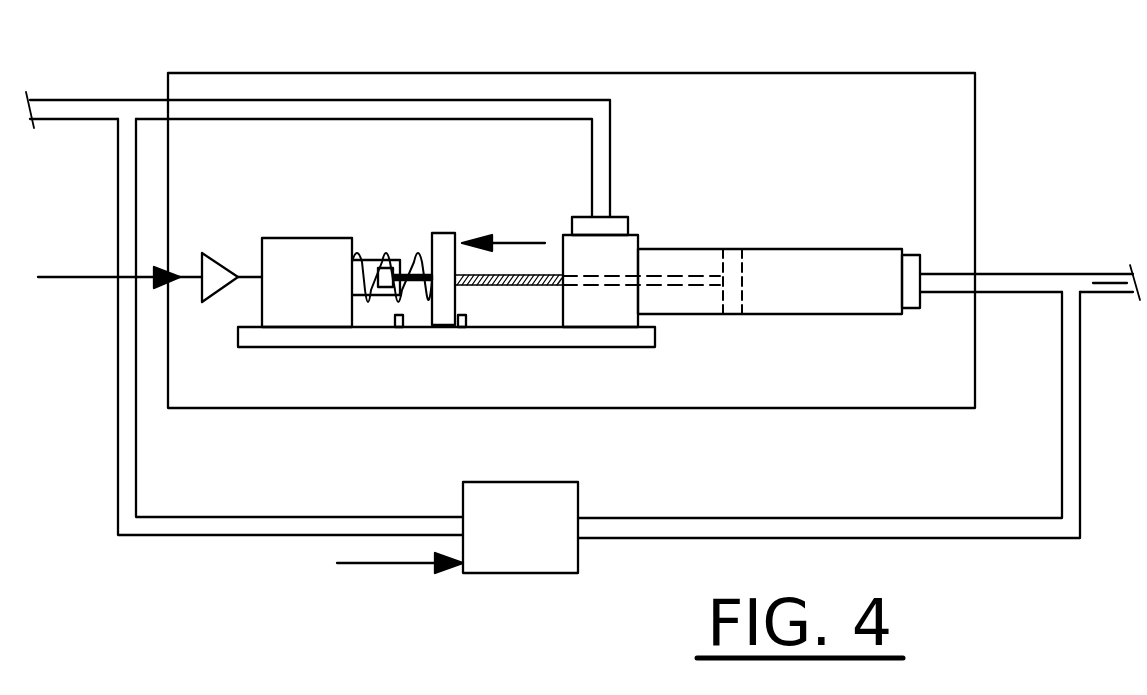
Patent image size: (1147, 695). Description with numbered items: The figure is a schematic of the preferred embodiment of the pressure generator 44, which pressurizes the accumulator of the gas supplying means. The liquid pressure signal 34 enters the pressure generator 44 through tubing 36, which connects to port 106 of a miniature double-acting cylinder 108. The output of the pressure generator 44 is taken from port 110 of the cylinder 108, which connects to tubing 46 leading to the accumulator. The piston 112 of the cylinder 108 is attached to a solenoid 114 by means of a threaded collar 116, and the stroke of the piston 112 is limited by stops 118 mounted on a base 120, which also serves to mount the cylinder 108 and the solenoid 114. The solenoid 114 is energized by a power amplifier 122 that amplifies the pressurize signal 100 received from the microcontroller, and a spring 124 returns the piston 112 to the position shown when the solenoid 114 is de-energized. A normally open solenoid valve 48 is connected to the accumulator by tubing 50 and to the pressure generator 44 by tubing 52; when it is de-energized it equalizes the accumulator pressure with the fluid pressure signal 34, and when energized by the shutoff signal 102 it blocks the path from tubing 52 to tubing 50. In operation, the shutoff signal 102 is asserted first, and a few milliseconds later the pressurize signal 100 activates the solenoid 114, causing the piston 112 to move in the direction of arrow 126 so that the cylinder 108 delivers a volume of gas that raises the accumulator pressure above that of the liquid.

The fluid pressure signal 34 is at (1113, 283).
The tubing 36 is at (1107, 274).
The pressure generator 44 is at (975, 173).
The tubing 46 is at (57, 98).
The solenoid valve 48 is at (522, 482).
The tubing 50 is at (358, 515).
The tubing 52 is at (805, 518).
The pressurize signal 100 is at (72, 277).
The shutoff signal 102 is at (393, 563).
The port 106 is at (913, 250).
The miniature double-acting cylinder 108 is at (823, 249).
The port 110 is at (630, 220).
The piston 112 is at (732, 314).
The solenoid 114 is at (303, 237).
The threaded collar 116 is at (438, 233).
The stops 118 is at (400, 327).
The base 120 is at (548, 347).
The power amplifier 122 is at (208, 252).
The spring 124 is at (385, 250).
The arrow 126 is at (513, 242).